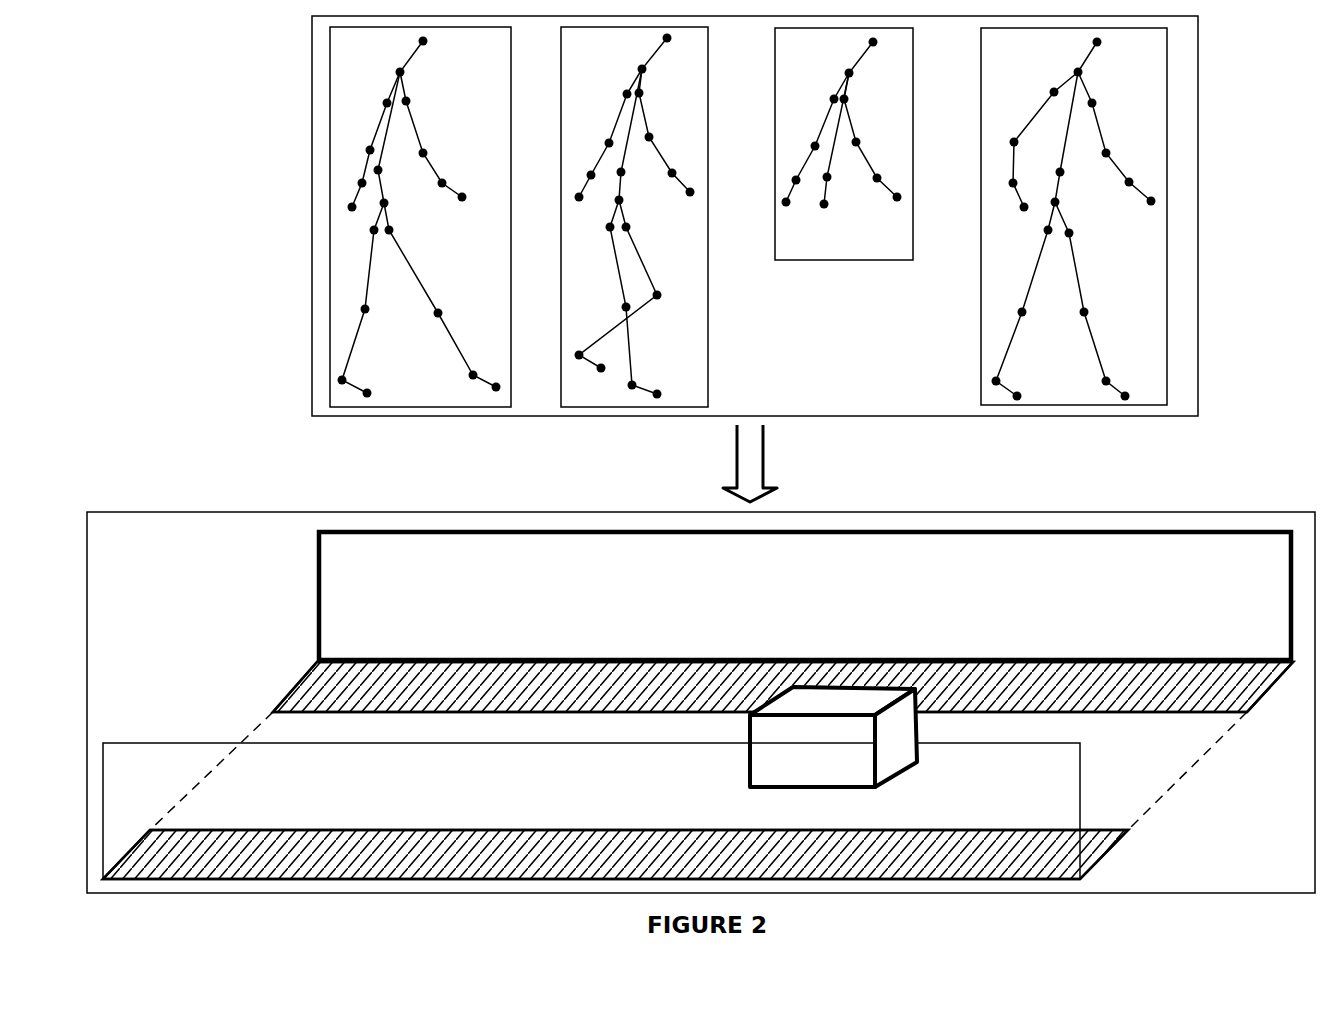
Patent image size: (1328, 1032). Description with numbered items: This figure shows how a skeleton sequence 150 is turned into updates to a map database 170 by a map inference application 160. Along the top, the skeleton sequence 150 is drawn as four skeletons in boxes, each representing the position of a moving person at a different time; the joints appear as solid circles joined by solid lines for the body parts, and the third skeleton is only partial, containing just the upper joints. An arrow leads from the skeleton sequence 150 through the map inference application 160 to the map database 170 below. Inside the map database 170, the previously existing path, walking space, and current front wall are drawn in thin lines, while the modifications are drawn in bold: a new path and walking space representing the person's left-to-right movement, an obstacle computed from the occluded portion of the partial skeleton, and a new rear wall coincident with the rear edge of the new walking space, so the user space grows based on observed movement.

The skeleton sequence 150 is at (311, 203).
The map inference application 160 is at (582, 463).
The map database 170 is at (127, 597).